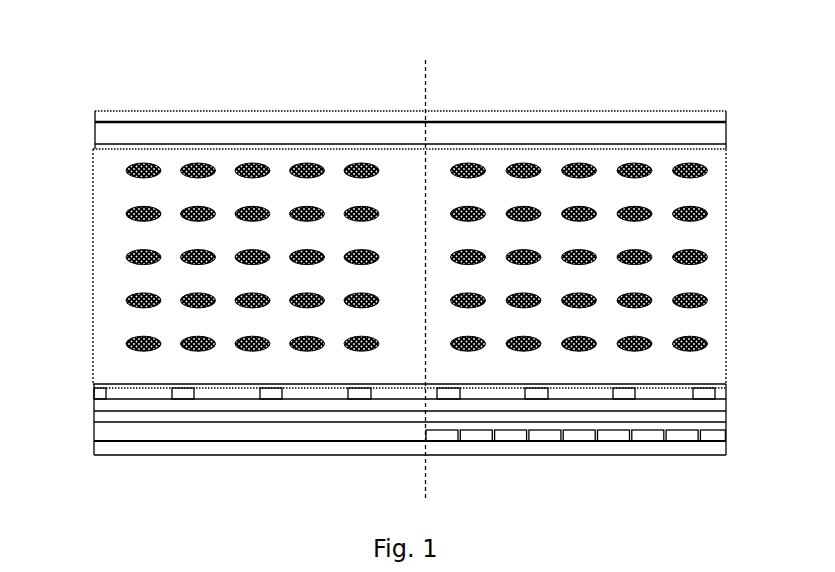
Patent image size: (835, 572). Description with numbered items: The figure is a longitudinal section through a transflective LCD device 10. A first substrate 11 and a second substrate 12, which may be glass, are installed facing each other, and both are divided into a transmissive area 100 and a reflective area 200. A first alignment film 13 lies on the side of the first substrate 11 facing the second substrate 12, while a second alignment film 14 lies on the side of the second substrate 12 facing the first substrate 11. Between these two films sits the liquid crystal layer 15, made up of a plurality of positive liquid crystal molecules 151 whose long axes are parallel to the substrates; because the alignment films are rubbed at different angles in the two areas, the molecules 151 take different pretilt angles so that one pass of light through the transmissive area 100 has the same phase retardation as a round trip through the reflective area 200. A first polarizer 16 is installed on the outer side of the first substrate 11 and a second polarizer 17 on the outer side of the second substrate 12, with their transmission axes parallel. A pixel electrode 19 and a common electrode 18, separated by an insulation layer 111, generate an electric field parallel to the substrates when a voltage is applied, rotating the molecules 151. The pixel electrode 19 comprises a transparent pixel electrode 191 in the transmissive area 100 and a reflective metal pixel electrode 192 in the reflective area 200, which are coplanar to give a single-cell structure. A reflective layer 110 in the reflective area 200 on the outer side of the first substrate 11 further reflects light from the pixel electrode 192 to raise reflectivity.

The transflective LCD device 10 is at (431, 37).
The first substrate 11 is at (158, 441).
The second substrate 12 is at (158, 122).
The first alignment film 13 is at (100, 385).
The second alignment film 14 is at (238, 147).
The liquid crystal layer 15 is at (100, 280).
The first polarizer 16 is at (378, 449).
The second polarizer 17 is at (317, 115).
The common electrode 18 is at (95, 410).
The pixel electrode 19 is at (750, 332).
The transmissive area 100 is at (207, 462).
The reflective layer 110 is at (713, 437).
The insulation layer 111 is at (727, 409).
The liquid crystal molecules 151 is at (128, 212).
The pixel electrode in the transmissive area 191 is at (98, 393).
The pixel electrode in the reflective area 192 is at (700, 386).
The reflective area 200 is at (541, 463).